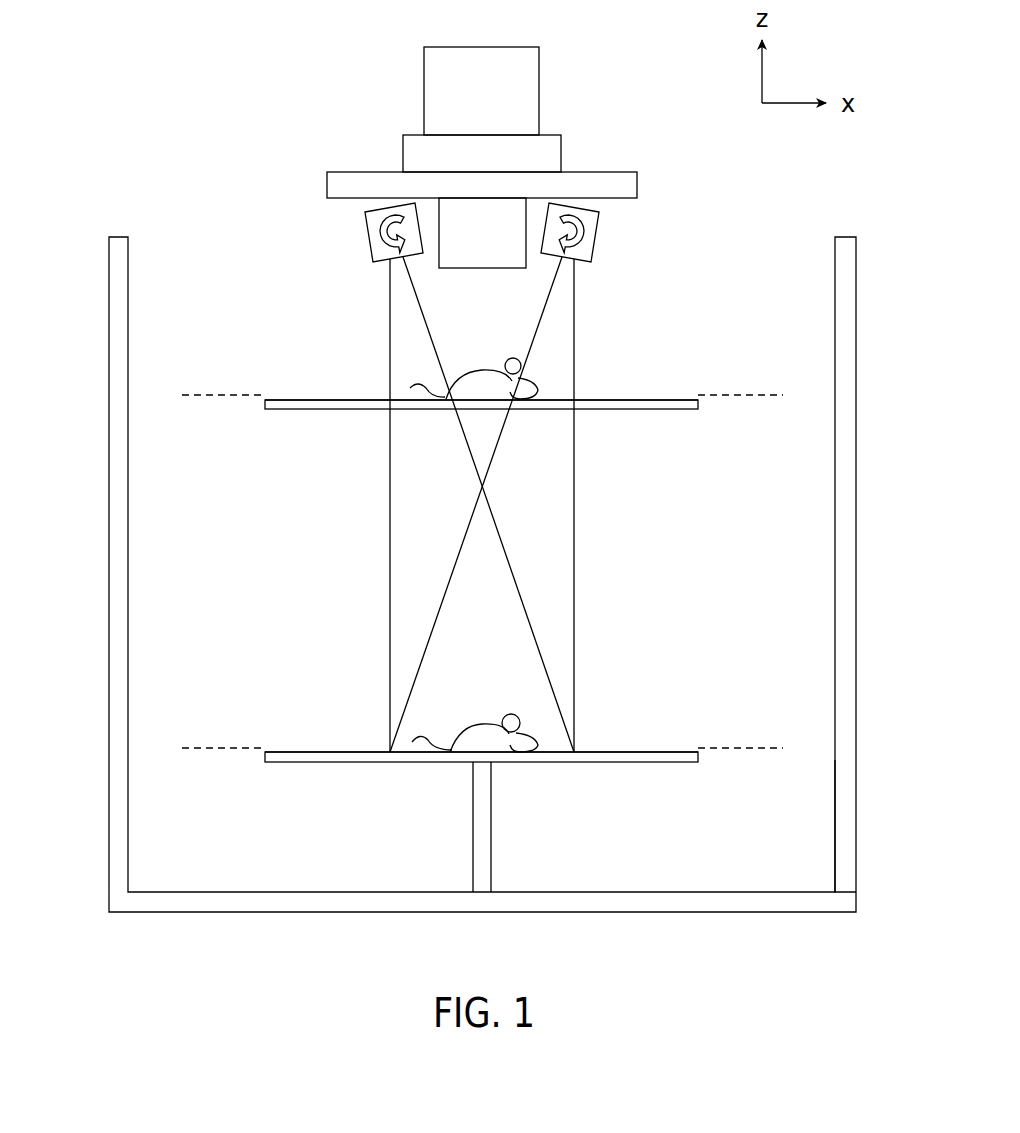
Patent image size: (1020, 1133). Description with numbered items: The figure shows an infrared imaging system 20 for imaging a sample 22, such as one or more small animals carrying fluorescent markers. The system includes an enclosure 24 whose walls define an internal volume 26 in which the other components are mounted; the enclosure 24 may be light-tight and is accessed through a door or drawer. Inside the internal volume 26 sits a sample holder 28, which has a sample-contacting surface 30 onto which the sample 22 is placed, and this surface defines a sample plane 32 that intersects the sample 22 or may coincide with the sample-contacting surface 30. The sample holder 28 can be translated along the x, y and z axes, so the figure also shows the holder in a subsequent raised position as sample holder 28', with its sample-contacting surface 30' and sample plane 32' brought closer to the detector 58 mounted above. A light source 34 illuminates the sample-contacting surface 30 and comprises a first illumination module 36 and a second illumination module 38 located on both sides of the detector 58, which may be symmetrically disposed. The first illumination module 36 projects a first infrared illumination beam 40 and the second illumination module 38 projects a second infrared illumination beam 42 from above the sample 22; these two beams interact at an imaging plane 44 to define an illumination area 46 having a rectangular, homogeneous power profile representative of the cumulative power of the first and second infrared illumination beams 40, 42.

The infrared imaging system 20 is at (117, 124).
The sample 22 is at (535, 386).
The enclosure 24 is at (109, 873).
The internal volume 26 is at (797, 807).
The sample holder 28 is at (460, 822).
The sample holder 28' is at (481, 438).
The sample-contacting surface 30 is at (481, 725).
The sample-contacting surface 30' is at (481, 371).
The sample plane 32 is at (483, 720).
The sample plane 32' is at (486, 369).
The light source 34 is at (500, 254).
The first illumination module 36 is at (366, 232).
The second illumination module 38 is at (598, 215).
The first infrared illumination beam 40 is at (389, 343).
The second infrared illumination beam 42 is at (565, 332).
The imaging plane 44 is at (553, 752).
The illumination area 46 is at (423, 735).
The detector 58 is at (331, 115).